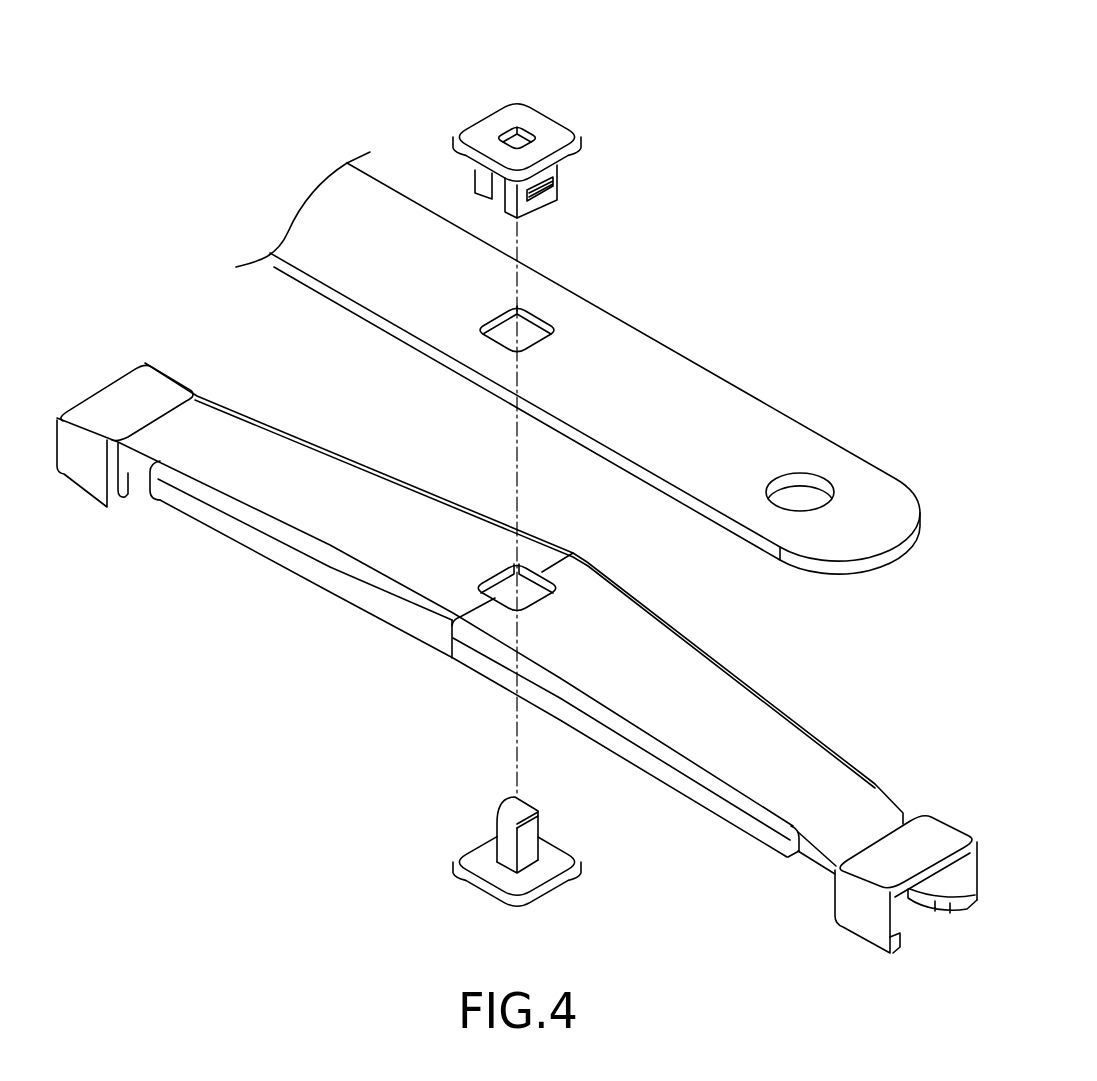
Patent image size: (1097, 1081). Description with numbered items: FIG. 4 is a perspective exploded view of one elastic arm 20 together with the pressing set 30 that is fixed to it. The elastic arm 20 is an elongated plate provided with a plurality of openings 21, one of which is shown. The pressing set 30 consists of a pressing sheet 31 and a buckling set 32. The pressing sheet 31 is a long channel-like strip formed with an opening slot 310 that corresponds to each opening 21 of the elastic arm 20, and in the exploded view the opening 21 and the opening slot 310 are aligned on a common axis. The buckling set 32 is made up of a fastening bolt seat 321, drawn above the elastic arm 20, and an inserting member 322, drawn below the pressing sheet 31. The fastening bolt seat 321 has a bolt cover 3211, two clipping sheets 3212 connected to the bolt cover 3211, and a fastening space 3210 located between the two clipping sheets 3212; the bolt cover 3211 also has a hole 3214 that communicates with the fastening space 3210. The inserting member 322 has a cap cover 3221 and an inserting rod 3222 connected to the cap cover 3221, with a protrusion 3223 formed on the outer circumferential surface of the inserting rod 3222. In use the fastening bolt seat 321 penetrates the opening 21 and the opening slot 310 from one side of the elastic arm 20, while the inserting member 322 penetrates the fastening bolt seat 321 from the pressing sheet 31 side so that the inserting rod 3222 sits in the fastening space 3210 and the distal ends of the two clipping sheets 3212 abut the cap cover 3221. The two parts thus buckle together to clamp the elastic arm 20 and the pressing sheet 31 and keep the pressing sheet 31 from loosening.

The elastic arm 20 is at (705, 403).
The opening 21 is at (536, 330).
The pressing set 30 is at (197, 120).
The pressing sheet 31 is at (263, 450).
The opening slot 310 is at (527, 583).
The buckling set 32 is at (441, 131).
The fastening bolt seat 321 is at (673, 137).
The bolt cover 3211 is at (556, 130).
The clipping sheet 3212 is at (553, 177).
The fastening space 3210 is at (517, 224).
The hole 3214 is at (523, 133).
The inserting member 322 is at (368, 758).
The cap cover 3221 is at (487, 853).
The inserting rod 3222 is at (502, 828).
The protrusion 3223 is at (540, 815).